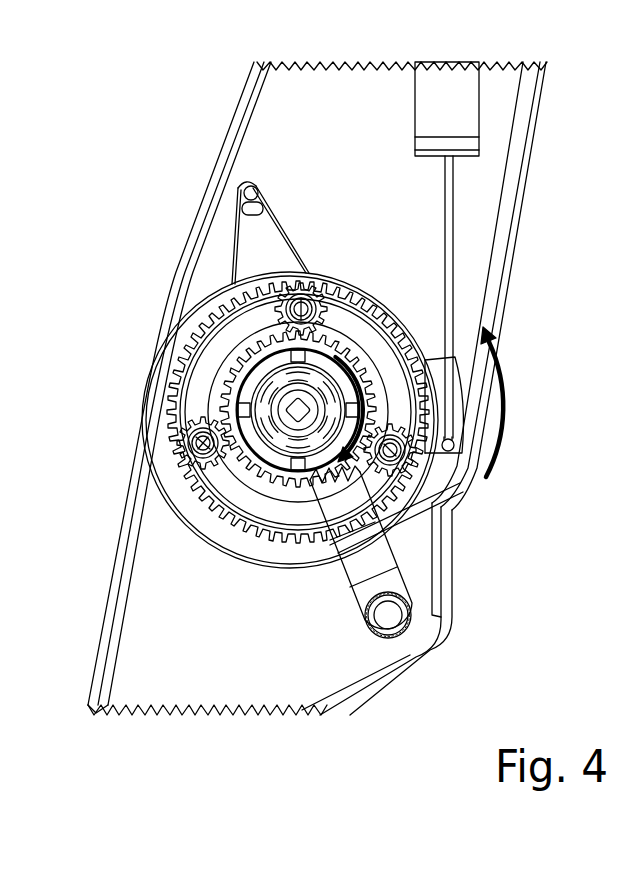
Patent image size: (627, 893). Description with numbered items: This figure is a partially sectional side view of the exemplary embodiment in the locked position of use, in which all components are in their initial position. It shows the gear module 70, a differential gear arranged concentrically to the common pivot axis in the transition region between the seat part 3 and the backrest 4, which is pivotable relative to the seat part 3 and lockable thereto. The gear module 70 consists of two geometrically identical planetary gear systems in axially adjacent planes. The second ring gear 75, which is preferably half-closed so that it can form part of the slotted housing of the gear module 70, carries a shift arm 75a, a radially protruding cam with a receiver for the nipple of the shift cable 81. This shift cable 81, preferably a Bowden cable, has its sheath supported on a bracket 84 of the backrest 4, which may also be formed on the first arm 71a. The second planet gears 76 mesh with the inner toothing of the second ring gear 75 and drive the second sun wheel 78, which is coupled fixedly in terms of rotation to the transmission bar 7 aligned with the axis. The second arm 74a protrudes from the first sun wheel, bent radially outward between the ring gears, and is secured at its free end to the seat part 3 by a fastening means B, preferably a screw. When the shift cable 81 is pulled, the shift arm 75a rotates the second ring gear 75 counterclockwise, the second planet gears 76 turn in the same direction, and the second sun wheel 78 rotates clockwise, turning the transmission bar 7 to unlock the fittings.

The seat part 3 is at (152, 594).
The backrest 4 is at (290, 125).
The transmission bar 7 is at (317, 422).
The gear module 70 is at (162, 358).
The first arm 71a is at (253, 240).
The second arm 74a is at (367, 562).
The second ring gear 75 is at (173, 377).
The shift arm 75a is at (455, 405).
The second planet gear 76 is at (175, 445).
The second sun wheel 78 is at (237, 458).
The shift cable 81 is at (455, 251).
The bracket 84 is at (455, 148).
The fastening means B is at (390, 615).